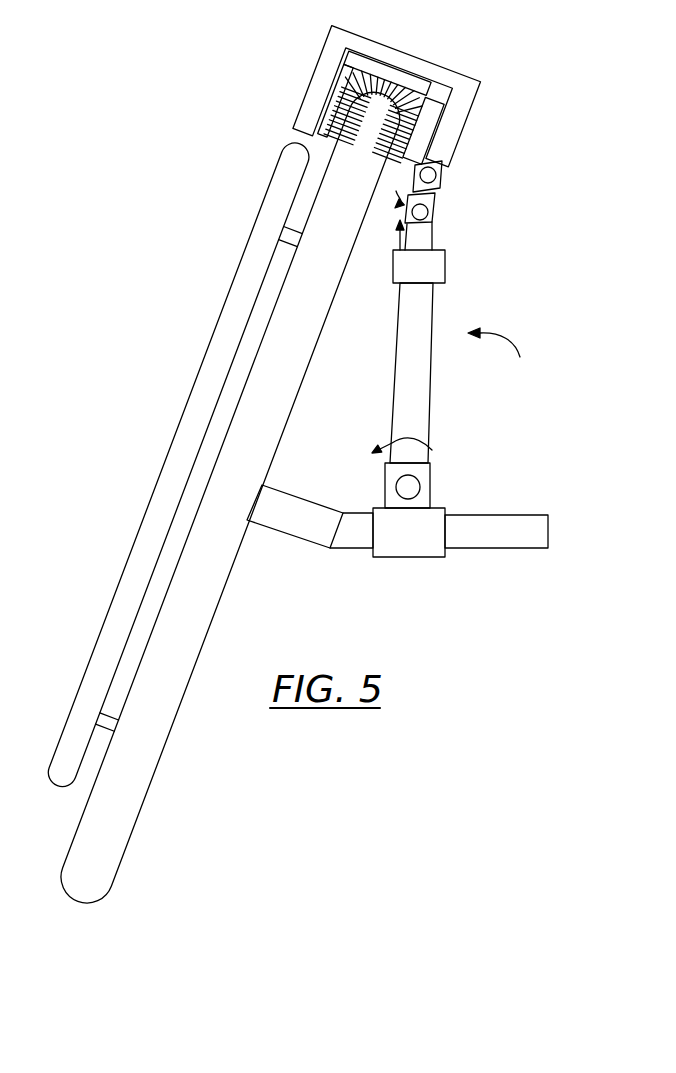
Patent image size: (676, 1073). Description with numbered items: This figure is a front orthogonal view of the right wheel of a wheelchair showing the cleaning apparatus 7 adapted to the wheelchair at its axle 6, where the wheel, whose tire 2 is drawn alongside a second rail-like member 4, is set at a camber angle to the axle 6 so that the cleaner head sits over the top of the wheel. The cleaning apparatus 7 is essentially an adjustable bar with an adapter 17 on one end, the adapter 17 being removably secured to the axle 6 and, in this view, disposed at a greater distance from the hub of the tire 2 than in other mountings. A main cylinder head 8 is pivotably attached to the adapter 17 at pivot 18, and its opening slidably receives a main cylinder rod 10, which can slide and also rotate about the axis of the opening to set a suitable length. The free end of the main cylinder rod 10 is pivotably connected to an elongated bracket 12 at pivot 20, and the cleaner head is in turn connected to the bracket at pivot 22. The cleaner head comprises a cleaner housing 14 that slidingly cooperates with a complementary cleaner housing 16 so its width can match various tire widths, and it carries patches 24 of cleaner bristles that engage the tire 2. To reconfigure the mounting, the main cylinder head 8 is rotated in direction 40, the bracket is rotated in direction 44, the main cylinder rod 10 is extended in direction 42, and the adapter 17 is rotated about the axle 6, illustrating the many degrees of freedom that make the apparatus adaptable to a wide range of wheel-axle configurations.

The tire 2 is at (113, 880).
The second rail 4 is at (204, 362).
The axle 6 is at (502, 515).
The cleaning apparatus 7 is at (501, 353).
The main cylinder head 8 is at (431, 405).
The main cylinder rod 10 is at (437, 243).
The elongated bracket 12 is at (433, 191).
The cleaner housing 14 is at (466, 118).
The complementary cleaner housing 16 is at (412, 57).
The adapter 17 is at (405, 557).
The pivot 18 is at (430, 472).
The pivot 20 is at (436, 208).
The pivot 22 is at (441, 175).
The patches of cleaner bristles 24 is at (430, 133).
The direction of rotation of main cylinder head 40 is at (386, 446).
The direction of extension of main cylinder rod 42 is at (385, 235).
The direction of rotation of bracket 44 is at (395, 188).